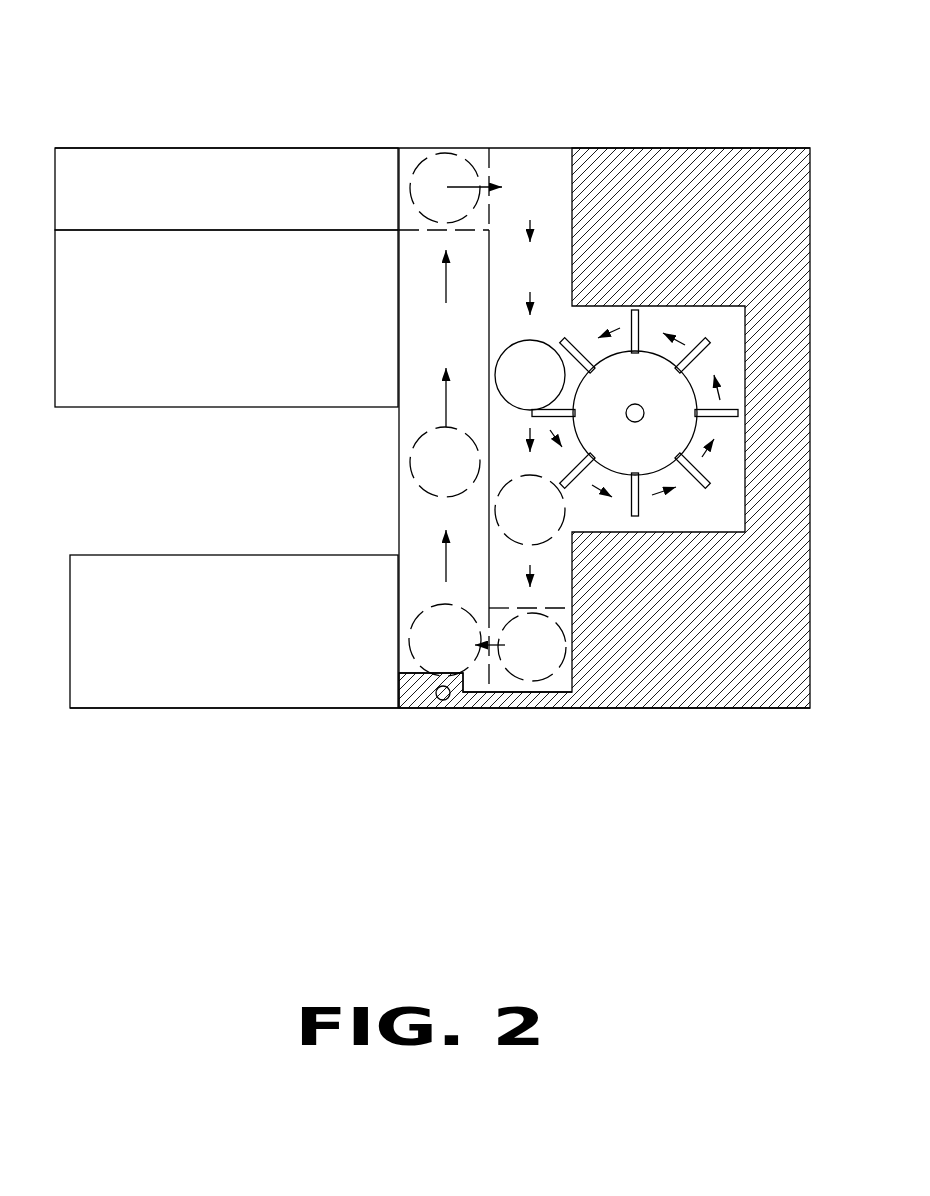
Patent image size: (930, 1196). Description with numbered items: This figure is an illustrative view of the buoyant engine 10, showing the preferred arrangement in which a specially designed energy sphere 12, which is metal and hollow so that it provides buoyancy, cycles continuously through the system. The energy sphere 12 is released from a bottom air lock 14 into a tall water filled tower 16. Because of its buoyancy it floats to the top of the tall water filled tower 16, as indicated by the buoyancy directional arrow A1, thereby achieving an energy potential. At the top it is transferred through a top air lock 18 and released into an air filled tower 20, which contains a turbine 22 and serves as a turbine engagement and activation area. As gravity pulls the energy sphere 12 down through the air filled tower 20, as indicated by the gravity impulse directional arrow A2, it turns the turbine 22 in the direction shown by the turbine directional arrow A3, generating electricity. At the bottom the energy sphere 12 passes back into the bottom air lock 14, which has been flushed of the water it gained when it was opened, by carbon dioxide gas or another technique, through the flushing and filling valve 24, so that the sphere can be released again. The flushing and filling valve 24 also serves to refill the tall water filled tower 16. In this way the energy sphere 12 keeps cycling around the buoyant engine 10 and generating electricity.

The buoyant engine 10 is at (681, 105).
The energy sphere 12 is at (433, 620).
The bottom air lock 14 is at (397, 673).
The tall water filled tower 16 is at (423, 255).
The top air lock 18 is at (478, 160).
The air filled tower 20 is at (550, 265).
The turbine 22 is at (680, 415).
The flushing and filling valve 24 is at (442, 701).
The buoyancy directional arrow A1 is at (447, 548).
The gravity impulse directional arrow A2 is at (530, 442).
The turbine directional arrow A3 is at (680, 342).